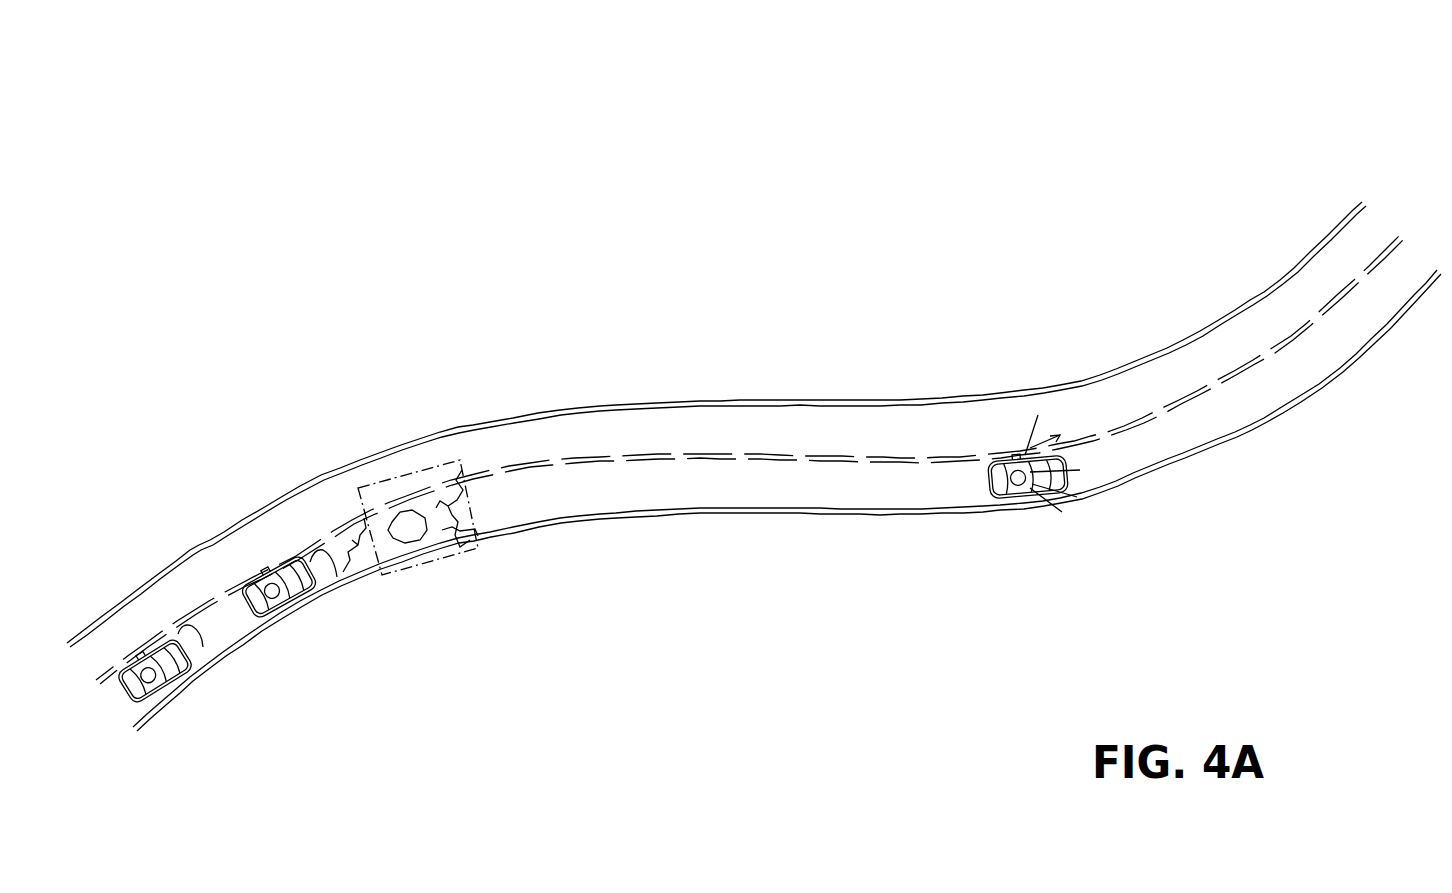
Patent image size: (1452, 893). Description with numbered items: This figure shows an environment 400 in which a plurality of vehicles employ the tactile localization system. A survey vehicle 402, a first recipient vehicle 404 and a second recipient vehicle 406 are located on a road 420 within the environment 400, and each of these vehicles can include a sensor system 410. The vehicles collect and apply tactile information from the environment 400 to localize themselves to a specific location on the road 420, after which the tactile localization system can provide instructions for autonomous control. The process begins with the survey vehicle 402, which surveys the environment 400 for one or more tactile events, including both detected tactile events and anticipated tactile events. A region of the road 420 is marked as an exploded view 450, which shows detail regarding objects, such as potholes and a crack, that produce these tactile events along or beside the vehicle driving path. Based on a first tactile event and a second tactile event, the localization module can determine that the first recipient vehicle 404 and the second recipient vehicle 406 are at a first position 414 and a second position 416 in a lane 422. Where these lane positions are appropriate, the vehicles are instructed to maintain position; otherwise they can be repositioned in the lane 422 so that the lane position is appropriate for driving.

The environment 400 is at (1098, 155).
The survey vehicle 402 is at (1008, 498).
The first recipient vehicle 404 is at (263, 624).
The second recipient vehicle 406 is at (152, 703).
The sensor system 410 is at (143, 650).
The first position 414 is at (343, 572).
The second position 416 is at (203, 642).
The road 420 is at (1163, 352).
The lane 422 is at (1270, 398).
The exploded view 450 is at (460, 467).